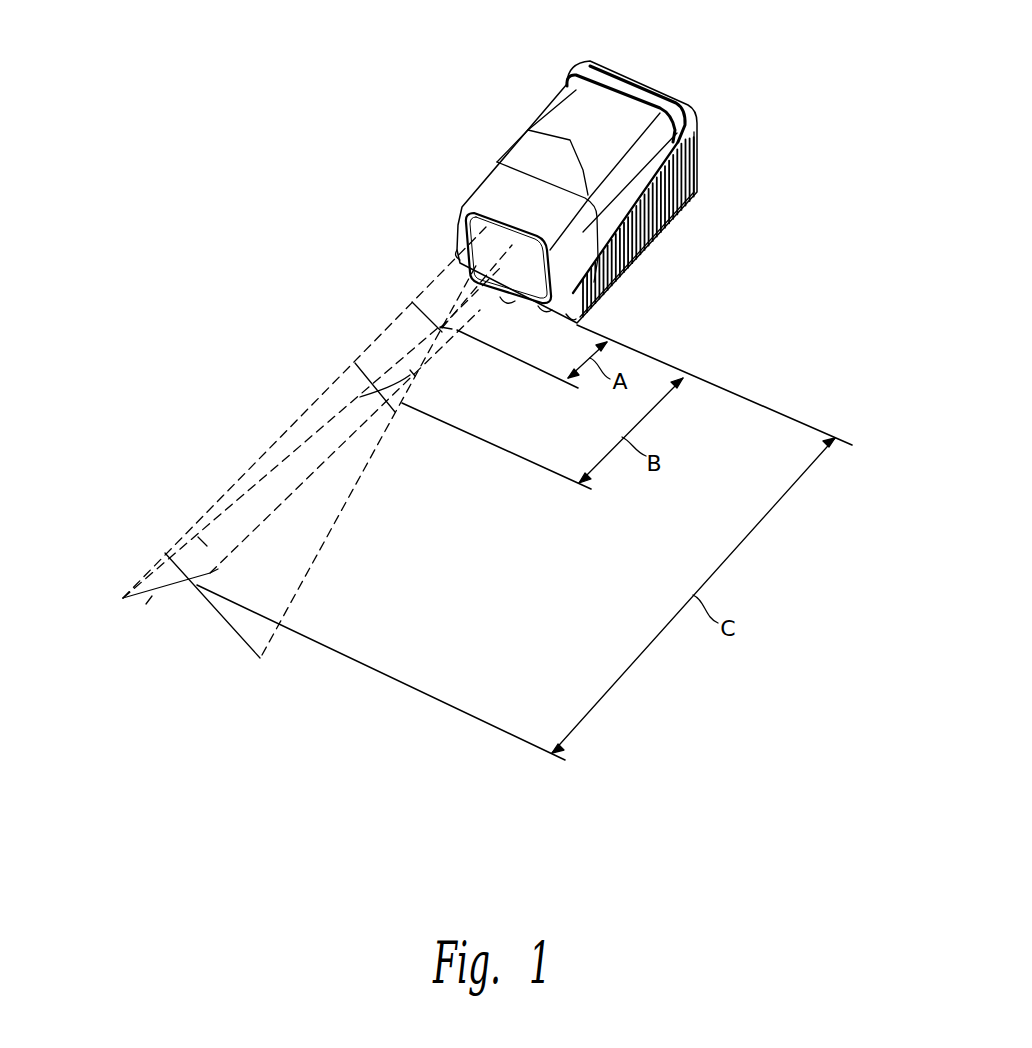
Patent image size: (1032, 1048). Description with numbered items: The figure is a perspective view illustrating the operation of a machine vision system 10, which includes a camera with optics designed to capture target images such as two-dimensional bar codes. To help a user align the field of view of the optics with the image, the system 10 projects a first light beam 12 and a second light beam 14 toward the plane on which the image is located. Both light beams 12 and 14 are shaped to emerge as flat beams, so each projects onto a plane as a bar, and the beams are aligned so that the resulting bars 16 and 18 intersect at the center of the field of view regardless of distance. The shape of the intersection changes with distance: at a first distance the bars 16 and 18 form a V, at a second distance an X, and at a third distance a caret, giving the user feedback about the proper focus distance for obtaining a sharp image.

The machine vision system 10 is at (662, 58).
The first light beam 12 is at (317, 513).
The second light beam 14 is at (198, 533).
The bar 16 is at (455, 329).
The bar 18 is at (427, 308).